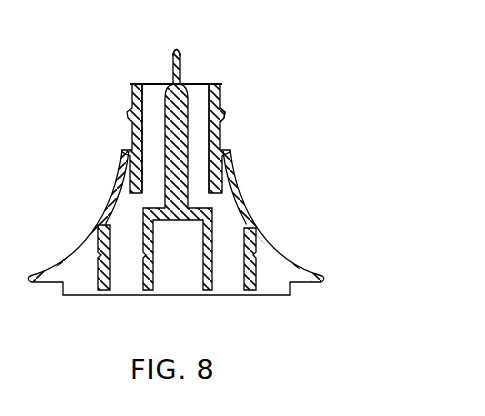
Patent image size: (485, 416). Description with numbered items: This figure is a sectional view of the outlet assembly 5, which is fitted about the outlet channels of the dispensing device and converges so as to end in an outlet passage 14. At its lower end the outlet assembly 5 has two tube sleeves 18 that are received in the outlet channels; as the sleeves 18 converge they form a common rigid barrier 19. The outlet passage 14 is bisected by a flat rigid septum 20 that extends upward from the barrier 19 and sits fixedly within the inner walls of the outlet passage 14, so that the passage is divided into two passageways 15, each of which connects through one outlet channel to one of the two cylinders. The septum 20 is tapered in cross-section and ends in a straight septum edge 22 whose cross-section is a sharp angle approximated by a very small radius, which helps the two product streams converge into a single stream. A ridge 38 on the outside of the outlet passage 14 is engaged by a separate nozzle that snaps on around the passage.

The outlet assembly 5 is at (255, 222).
The outlet passage 14 is at (133, 95).
The passageways 15 is at (152, 148).
The sleeves 18 is at (123, 282).
The rigid barrier 19 is at (183, 170).
The septum 20 is at (181, 66).
The septum edge 22 is at (176, 46).
The ridge 38 is at (221, 113).